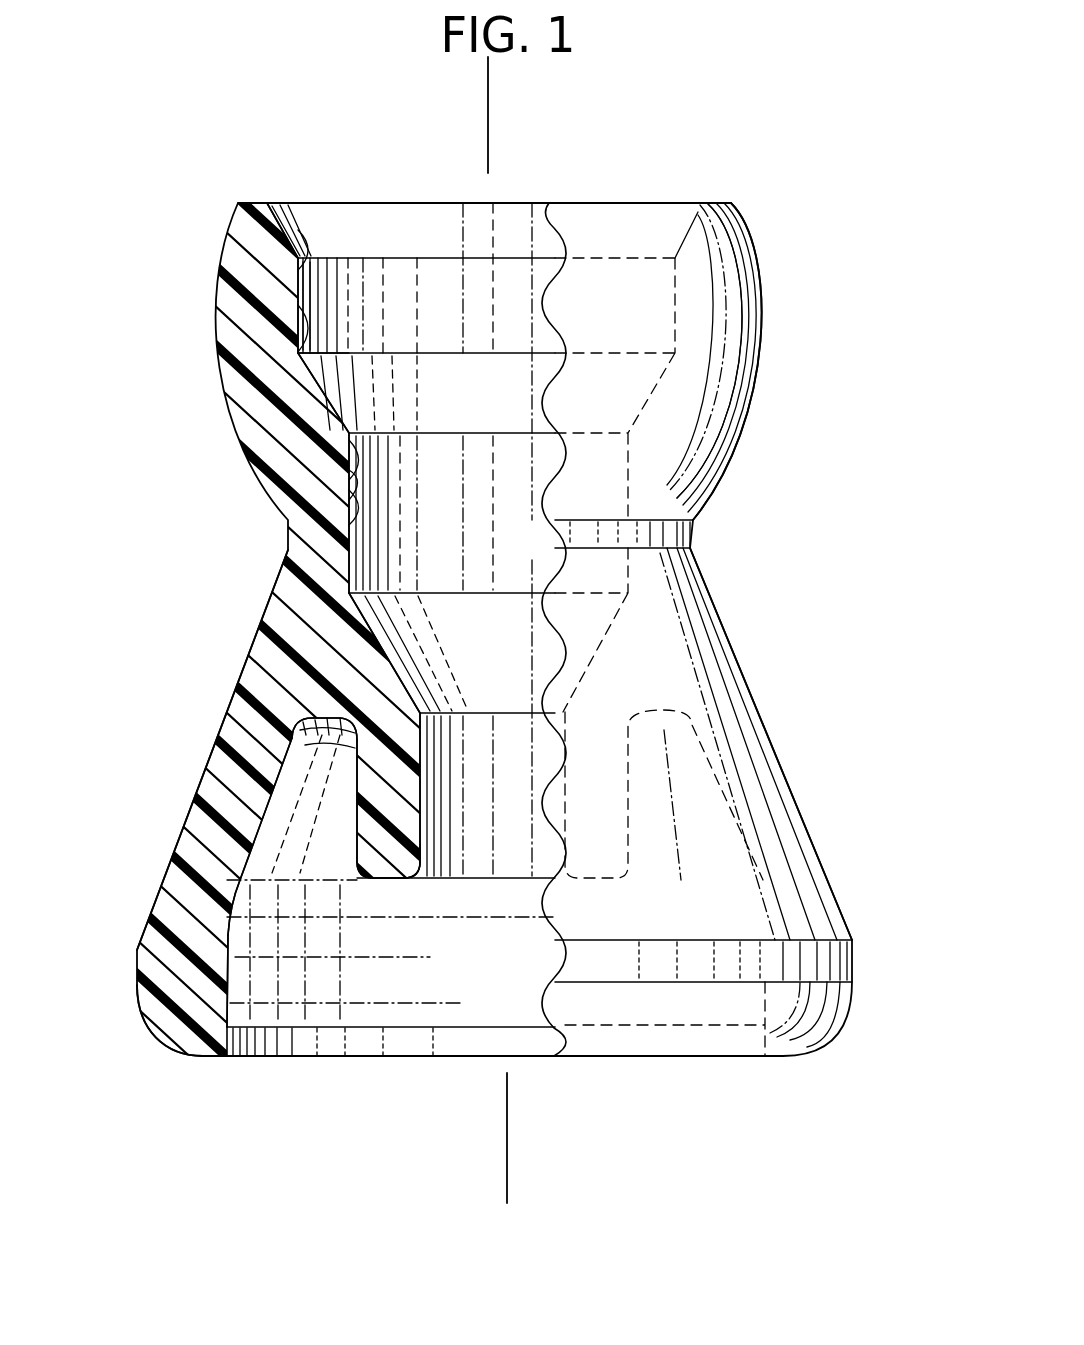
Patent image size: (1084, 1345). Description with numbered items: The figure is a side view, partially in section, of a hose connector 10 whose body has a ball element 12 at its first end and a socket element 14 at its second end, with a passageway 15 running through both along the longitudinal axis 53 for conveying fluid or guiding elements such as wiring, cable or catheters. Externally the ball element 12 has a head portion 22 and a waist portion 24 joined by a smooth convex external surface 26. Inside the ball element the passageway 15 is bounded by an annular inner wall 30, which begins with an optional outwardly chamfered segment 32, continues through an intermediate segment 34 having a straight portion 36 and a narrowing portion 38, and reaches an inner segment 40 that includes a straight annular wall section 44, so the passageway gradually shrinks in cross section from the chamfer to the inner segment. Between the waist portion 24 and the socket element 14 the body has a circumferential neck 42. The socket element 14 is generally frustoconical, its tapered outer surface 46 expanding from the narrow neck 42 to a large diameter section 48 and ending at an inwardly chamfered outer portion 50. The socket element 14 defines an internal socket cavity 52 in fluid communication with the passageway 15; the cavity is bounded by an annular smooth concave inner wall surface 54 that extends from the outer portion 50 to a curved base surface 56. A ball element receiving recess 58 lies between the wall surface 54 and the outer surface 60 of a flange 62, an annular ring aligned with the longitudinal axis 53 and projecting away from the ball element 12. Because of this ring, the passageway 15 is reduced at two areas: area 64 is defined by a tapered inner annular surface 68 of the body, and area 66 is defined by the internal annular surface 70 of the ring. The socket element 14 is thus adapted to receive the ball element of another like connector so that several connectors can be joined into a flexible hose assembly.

The connector 10 is at (860, 406).
The ball element 12 is at (765, 298).
The socket element 14 is at (813, 830).
The passageway 15 is at (484, 230).
The head portion 22 is at (745, 225).
The waist portion 24 is at (712, 496).
The convex external surface 26 is at (765, 357).
The annular inner wall 30 is at (328, 270).
The chamfered segment 32 is at (298, 237).
The intermediate segment 34 is at (305, 368).
The straight portion 36 is at (312, 257).
The narrowing portion 38 is at (348, 433).
The inner segment 40 is at (338, 420).
The neck 42 is at (680, 536).
The straight annular wall section 44 is at (343, 480).
The tapered outer surface 46 is at (742, 667).
The large diameter section 48 is at (857, 960).
The inwardly chamfered outer portion 50 is at (160, 1033).
The internal socket cavity 52 is at (470, 1015).
The longitudinal axis 53 is at (510, 1162).
The concave inner wall surface 54 is at (230, 918).
The curved base surface 56 is at (243, 681).
The ball element receiving recess 58 is at (300, 823).
The outer surface of flange 60 is at (353, 782).
The flange 62 is at (391, 812).
The reduced passageway area 64 is at (470, 678).
The reduced passageway area 66 is at (482, 803).
The tapered inner annular surface 68 is at (372, 632).
The internal annular surface of ring 70 is at (428, 818).